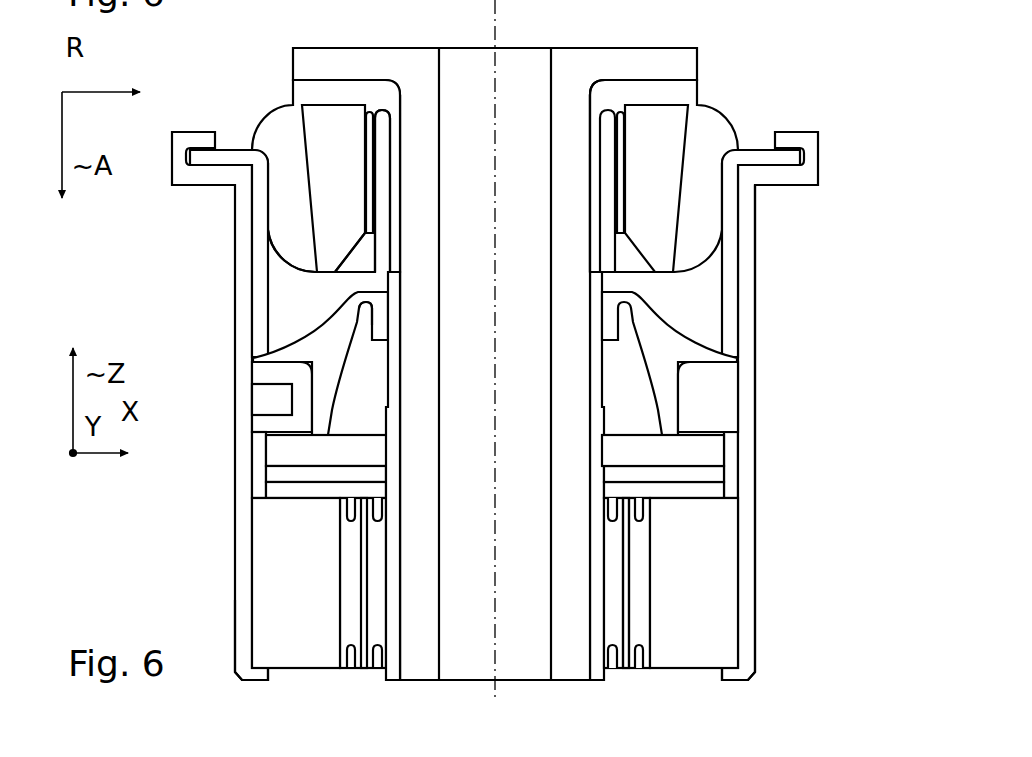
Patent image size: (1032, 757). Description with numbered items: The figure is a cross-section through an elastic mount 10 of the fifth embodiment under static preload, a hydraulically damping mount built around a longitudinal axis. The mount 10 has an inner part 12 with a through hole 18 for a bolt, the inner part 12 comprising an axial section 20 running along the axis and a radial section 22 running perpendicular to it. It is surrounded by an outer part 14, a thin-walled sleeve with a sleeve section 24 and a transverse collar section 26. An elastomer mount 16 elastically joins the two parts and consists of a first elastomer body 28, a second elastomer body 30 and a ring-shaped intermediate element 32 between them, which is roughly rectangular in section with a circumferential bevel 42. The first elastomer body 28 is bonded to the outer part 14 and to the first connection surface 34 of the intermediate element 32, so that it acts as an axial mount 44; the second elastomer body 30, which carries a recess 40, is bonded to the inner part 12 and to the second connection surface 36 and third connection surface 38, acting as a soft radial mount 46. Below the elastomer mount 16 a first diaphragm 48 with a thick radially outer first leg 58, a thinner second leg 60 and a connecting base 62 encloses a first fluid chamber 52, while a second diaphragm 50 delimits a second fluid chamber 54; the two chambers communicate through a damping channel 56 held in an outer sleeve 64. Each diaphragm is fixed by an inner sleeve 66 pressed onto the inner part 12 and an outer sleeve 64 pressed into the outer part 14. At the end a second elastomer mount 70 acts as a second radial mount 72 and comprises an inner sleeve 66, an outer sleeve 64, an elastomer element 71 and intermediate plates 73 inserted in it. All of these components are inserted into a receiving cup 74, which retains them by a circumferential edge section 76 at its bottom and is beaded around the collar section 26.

The mount 10 is at (753, 63).
The inner part 12 is at (573, 63).
The outer part 14 is at (730, 252).
The elastomer mount 16 is at (748, 110).
The through hole 18 is at (440, 76).
The axial section 20 is at (425, 245).
The radial section 22 is at (317, 62).
The sleeve section 24 is at (253, 258).
The collar section 26 is at (228, 160).
The first elastomer body 28 is at (278, 203).
The second elastomer body 30 is at (337, 87).
The intermediate element 32 is at (318, 130).
The first connection surface 34 is at (268, 240).
The second connection surface 36 is at (645, 107).
The third connection surface 38 is at (368, 162).
The recess 40 is at (378, 197).
The circumferential bevel 42 is at (347, 250).
The axial mount 44 is at (703, 217).
The soft radial mount 46 is at (677, 93).
The first diaphragm 48 is at (692, 311).
The second diaphragm 50 is at (702, 459).
The first fluid chamber 52 is at (700, 333).
The second fluid chamber 54 is at (353, 420).
The damping channel 56 is at (260, 400).
The first leg 58 is at (323, 338).
The second leg 60 is at (372, 310).
The base 62 is at (746, 193).
The outer sleeve 64 is at (725, 373).
The inner sleeve 66 is at (262, 563).
The second elastomer mount 70 is at (689, 678).
The elastomer element 71 is at (637, 620).
The second radial mount 72 is at (285, 687).
The intermediate plates 73 is at (630, 577).
The receiving cup 74 is at (745, 530).
The circumferential edge section 76 is at (263, 647).